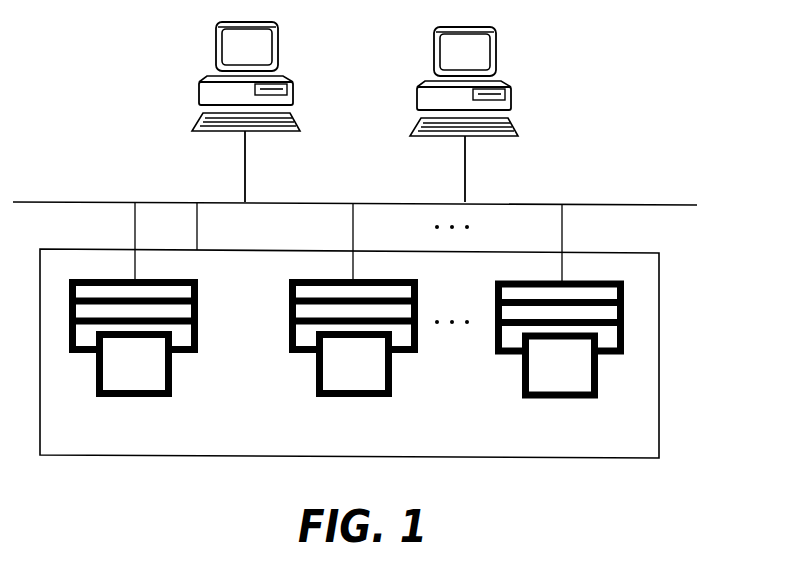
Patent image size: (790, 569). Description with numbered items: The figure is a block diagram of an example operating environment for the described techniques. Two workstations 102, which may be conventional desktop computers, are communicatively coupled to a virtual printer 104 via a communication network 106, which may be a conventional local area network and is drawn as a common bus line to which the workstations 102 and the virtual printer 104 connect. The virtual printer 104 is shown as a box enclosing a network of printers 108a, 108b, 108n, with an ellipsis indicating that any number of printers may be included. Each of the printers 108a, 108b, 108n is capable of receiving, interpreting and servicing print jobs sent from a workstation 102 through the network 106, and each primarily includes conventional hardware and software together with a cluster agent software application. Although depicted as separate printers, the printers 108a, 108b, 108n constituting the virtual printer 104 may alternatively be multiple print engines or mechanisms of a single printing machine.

The workstations 102 is at (432, 88).
The virtual printer 104 is at (658, 367).
The communication network 106 is at (603, 205).
The printer 108a is at (133, 357).
The printer 108b is at (353, 358).
The printer 108n is at (559, 360).